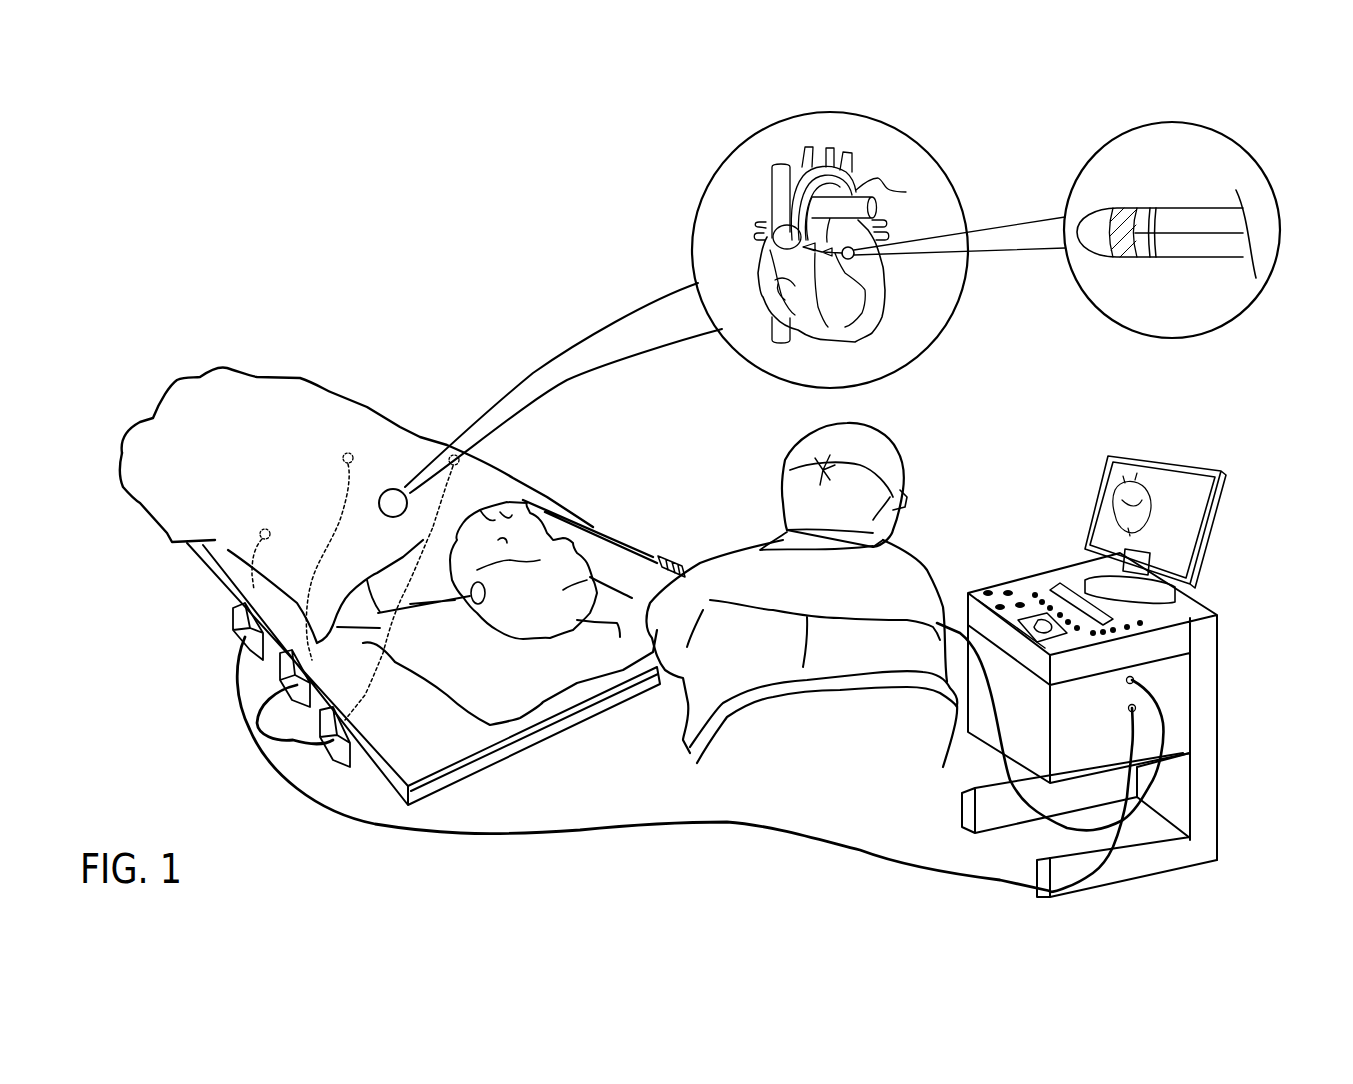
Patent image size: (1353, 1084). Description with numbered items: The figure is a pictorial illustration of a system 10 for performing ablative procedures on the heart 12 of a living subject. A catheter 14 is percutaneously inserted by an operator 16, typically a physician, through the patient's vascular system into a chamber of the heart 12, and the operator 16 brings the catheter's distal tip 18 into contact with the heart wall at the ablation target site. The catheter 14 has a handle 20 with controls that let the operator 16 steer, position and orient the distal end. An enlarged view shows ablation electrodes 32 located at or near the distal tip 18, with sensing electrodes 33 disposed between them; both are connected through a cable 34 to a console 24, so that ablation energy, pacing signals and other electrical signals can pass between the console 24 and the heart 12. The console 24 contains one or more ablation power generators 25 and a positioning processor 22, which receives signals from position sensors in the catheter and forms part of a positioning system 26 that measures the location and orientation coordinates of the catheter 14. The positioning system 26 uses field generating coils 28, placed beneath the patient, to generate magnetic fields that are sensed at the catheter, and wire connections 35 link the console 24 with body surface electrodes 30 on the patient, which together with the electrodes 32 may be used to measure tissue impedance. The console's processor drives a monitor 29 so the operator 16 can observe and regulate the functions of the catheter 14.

The system 10 is at (1256, 135).
The heart 12 is at (872, 330).
The catheter 14 is at (906, 192).
The operator 16 is at (717, 555).
The distal tip 18 is at (1106, 258).
The handle 20 is at (657, 553).
The positioning processor 22 is at (1186, 738).
The console 24 is at (1240, 599).
The ablation power generators 25 is at (1183, 638).
The positioning system 26 is at (636, 845).
The field generating coils 28 is at (340, 757).
The monitor 29 is at (1218, 482).
The body surface electrodes 30 is at (342, 457).
The ablation electrodes 32 is at (1124, 210).
The sensing electrodes 33 is at (1153, 258).
The cable 34 is at (1231, 258).
The wire connections 35 is at (327, 537).